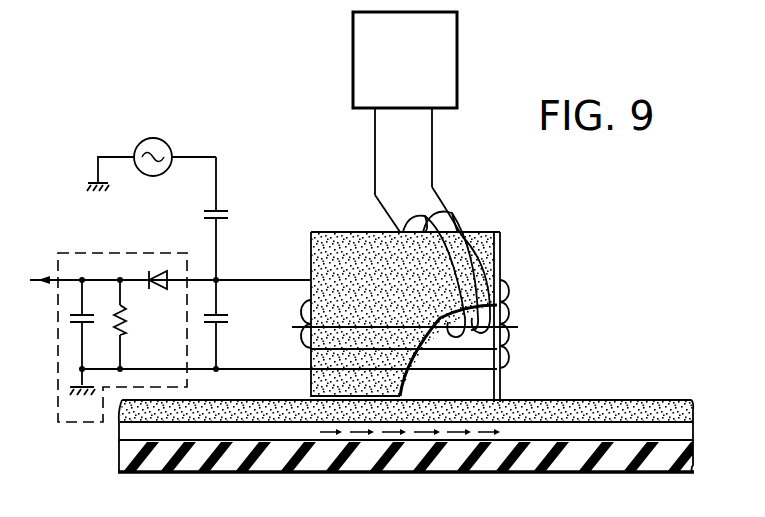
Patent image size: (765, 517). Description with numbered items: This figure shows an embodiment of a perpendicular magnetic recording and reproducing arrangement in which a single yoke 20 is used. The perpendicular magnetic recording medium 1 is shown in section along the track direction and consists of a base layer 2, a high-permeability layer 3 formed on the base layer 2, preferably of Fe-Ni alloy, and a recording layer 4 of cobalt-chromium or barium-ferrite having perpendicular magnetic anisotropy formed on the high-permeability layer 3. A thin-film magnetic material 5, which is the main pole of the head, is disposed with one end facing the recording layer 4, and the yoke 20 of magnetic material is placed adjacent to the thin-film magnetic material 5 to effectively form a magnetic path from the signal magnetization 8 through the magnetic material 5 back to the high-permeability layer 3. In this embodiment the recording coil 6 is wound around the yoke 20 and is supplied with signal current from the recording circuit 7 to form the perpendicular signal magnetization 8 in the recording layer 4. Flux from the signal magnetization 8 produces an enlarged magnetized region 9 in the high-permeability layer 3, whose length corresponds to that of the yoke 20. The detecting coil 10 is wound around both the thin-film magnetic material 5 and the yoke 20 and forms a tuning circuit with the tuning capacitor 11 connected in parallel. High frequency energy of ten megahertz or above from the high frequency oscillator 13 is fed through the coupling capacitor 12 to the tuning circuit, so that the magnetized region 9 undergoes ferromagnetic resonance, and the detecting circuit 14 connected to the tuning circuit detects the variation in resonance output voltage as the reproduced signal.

The perpendicular magnetic recording medium 1 is at (420, 438).
The base layer 2 is at (652, 465).
The high-permeability layer 3 is at (616, 432).
The recording layer 4 is at (582, 412).
The thin-film magnetic material 5 is at (502, 384).
The recording coil 6 is at (460, 224).
The recording circuit 7 is at (458, 52).
The perpendicular signal magnetization 8 is at (499, 410).
The enlarged magnetized region 9 is at (418, 437).
The detecting coil 10 is at (516, 294).
The tuning capacitor 11 is at (228, 316).
The coupling capacitor 12 is at (232, 202).
The high frequency oscillator 13 is at (163, 138).
The detecting circuit 14 is at (56, 374).
The yoke 20 is at (332, 232).